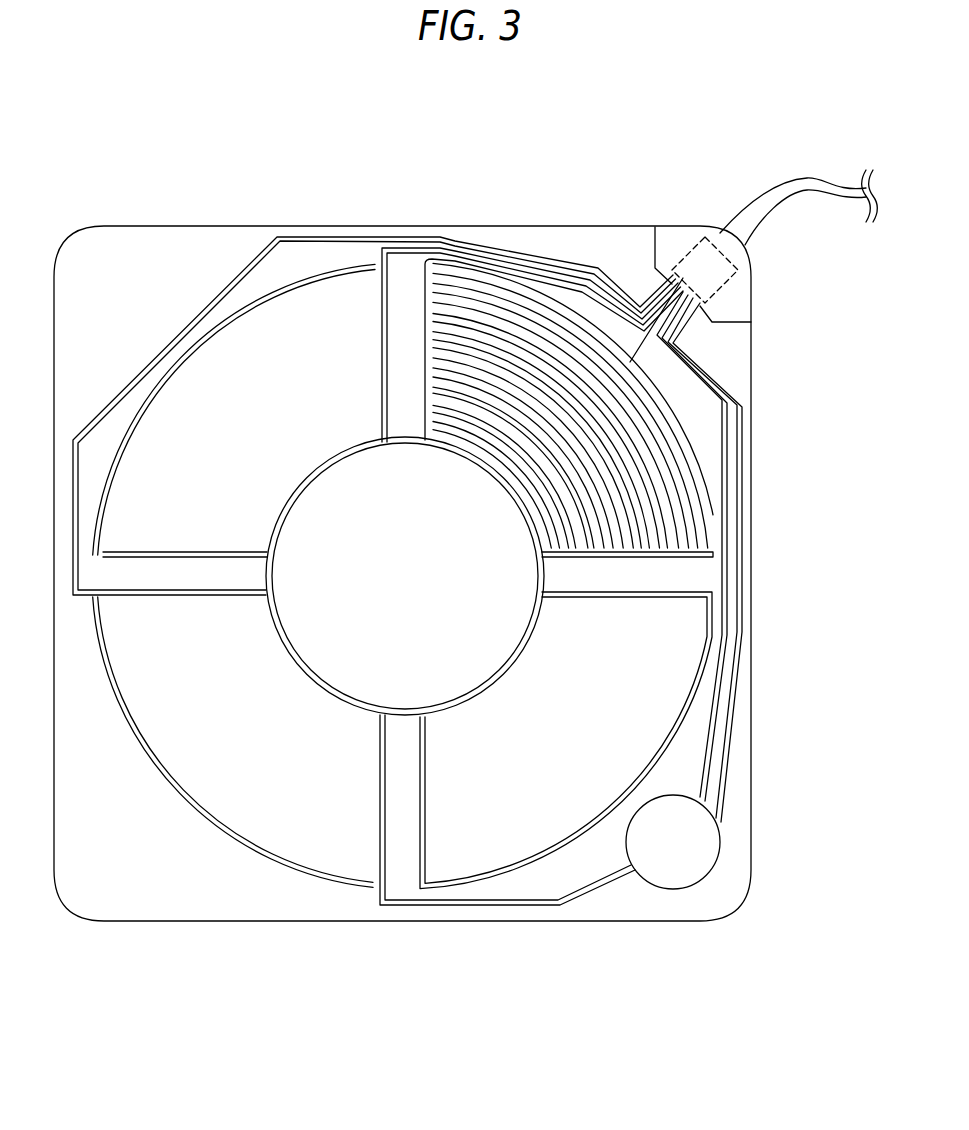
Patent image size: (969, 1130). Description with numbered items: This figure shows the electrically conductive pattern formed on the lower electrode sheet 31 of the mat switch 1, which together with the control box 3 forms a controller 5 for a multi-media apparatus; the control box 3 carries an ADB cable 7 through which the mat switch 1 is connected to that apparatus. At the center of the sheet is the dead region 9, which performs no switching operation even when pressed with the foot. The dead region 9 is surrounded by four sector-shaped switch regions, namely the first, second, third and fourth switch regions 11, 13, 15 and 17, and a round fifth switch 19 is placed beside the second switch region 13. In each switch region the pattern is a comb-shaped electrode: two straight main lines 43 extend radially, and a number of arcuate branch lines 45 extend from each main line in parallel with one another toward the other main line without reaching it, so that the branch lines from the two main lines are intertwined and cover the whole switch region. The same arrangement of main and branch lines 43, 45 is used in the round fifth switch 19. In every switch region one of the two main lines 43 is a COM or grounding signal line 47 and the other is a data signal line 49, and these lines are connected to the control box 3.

The mat switch 1 is at (749, 736).
The control box 3 is at (670, 238).
The controller 5 is at (781, 667).
The ADB cable 7 is at (833, 200).
The dead region 9 is at (396, 592).
The first switch region 11 is at (578, 402).
The second switch region 13 is at (562, 772).
The third switch region 15 is at (237, 772).
The fourth switch region 17 is at (237, 447).
The fifth switch 19 is at (662, 872).
The lower electrode sheet 31 is at (672, 475).
The main lines 43 is at (418, 268).
The arcuate branch lines 45 is at (653, 436).
The COM signal line 47 is at (482, 262).
The data signal line 49 is at (633, 360).